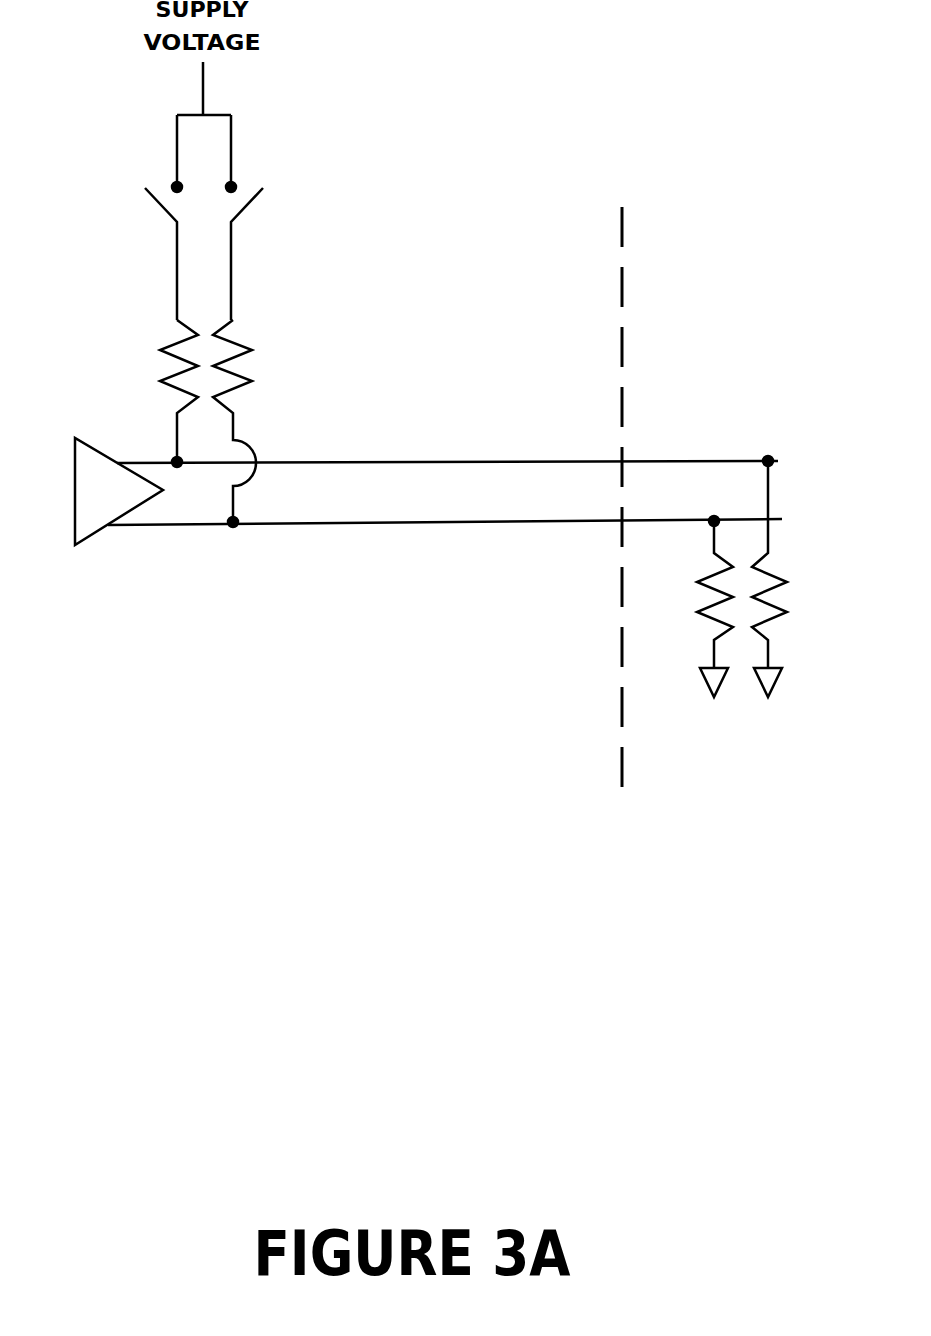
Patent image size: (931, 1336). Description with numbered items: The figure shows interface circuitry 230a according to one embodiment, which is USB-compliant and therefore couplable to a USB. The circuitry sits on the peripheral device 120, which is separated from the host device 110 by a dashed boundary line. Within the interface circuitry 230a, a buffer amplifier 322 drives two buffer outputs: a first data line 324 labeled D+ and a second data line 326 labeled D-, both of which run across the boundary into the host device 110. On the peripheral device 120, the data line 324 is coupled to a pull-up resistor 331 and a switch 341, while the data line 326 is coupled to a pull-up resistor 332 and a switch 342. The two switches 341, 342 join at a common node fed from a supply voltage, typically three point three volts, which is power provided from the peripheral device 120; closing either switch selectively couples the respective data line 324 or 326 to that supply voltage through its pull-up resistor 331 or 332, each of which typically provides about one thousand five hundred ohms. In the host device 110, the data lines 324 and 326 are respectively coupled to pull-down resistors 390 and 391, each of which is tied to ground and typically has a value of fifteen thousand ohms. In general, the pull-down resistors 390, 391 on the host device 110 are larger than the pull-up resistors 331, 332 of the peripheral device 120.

The host device 110 is at (738, 630).
The peripheral device 120 is at (428, 493).
The interface circuitry 230a is at (373, 313).
The buffer amplifier 322 is at (87, 500).
The first buffer output (data line) 324 is at (405, 456).
The second buffer output (data line) 326 is at (405, 532).
The pull-up resistor 331 is at (156, 393).
The pull-up resistor 332 is at (259, 423).
The switch 341 is at (145, 254).
The switch 342 is at (268, 254).
The pull-down resistor 390 is at (794, 579).
The pull-down resistor 391 is at (692, 609).